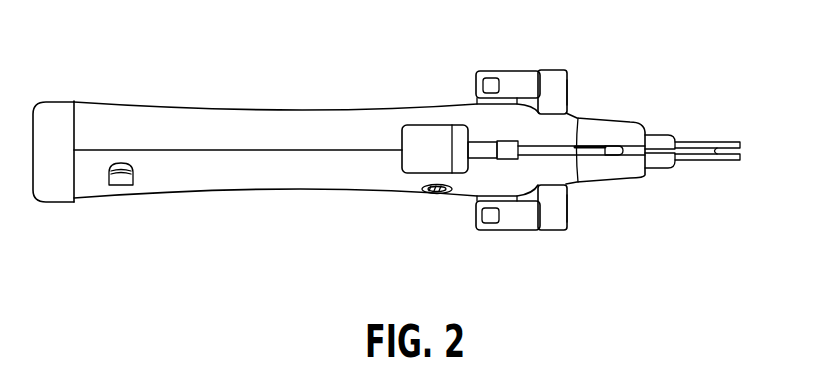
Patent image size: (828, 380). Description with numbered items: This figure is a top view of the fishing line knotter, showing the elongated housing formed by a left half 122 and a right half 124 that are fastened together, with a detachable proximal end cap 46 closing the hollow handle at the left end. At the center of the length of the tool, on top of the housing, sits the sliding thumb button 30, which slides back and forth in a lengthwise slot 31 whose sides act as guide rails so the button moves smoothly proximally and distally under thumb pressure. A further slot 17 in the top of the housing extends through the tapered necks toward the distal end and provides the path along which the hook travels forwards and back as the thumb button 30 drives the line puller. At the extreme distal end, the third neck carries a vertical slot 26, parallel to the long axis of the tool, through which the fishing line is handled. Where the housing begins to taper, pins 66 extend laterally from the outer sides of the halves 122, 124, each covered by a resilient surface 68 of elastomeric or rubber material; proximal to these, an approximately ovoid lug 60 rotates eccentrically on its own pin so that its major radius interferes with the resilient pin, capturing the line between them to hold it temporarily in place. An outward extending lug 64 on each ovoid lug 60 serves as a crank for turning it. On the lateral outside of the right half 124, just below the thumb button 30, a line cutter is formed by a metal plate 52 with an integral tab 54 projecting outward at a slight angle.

The slot 17 is at (633, 149).
The vertical slot 26 is at (718, 148).
The sliding thumb button 30 is at (413, 133).
The slot 31 is at (503, 155).
The proximal end cap 46 is at (55, 120).
The metal plate 52 is at (425, 196).
The integral tab 54 is at (438, 196).
The ovoid lug 60 is at (525, 153).
The outward extending lug 64 is at (485, 83).
The pins 66 is at (553, 70).
The resilient surface 68 is at (568, 92).
The left half 122 is at (247, 128).
The right half 124 is at (273, 163).